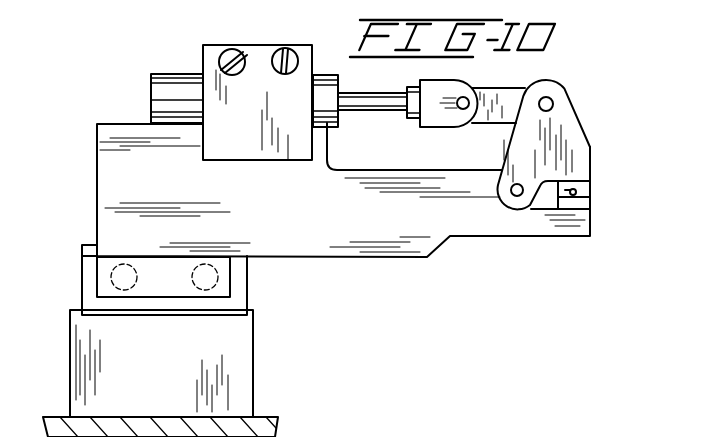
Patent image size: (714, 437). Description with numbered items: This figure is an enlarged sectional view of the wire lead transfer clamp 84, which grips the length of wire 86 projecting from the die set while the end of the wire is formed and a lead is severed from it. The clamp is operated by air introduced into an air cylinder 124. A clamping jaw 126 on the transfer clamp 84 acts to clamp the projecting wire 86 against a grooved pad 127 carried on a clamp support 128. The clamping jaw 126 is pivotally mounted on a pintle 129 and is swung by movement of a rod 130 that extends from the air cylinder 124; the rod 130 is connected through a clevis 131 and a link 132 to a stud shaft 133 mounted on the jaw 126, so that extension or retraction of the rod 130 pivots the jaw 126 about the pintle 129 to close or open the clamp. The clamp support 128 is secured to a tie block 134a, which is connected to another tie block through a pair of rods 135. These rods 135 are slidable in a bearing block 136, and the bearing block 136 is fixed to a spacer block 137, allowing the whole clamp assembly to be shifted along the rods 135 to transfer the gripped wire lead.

The transfer clamp 84 is at (593, 95).
The wire 86 is at (587, 190).
The air cylinder 124 is at (175, 90).
The clamping jaw 126 is at (587, 133).
The grooved pad 127 is at (582, 198).
The clamp support 128 is at (580, 217).
The pintle 129 is at (508, 207).
The rod 130 is at (383, 105).
The clevis 131 is at (455, 115).
The link 132 is at (495, 97).
The stud shaft 133 is at (551, 100).
The tie block 134a is at (227, 290).
The rods 135 is at (107, 274).
The bearing block 136 is at (183, 305).
The spacer block 137 is at (250, 385).